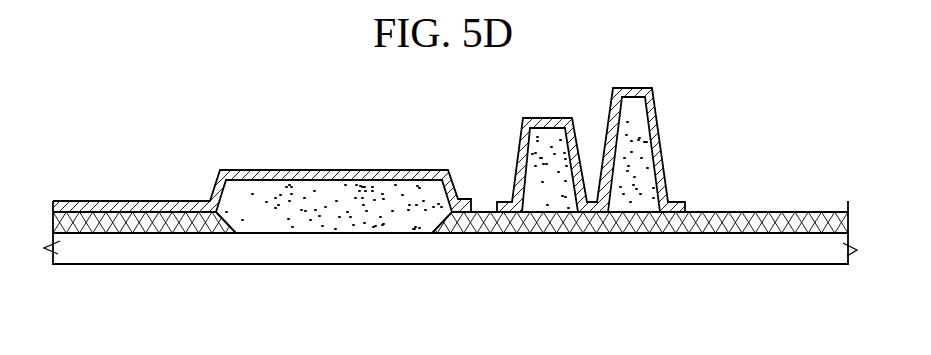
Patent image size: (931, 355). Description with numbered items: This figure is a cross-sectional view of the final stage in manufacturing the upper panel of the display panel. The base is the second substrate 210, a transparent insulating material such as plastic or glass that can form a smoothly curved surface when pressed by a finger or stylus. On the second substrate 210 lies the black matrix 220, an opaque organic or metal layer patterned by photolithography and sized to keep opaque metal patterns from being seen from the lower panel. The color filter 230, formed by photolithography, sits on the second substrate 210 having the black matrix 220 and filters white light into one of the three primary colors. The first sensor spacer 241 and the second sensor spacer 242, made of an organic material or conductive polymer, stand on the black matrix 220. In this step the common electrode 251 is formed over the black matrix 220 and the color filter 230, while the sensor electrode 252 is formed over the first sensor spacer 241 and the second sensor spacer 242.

The second substrate 210 is at (151, 243).
The black matrix 220 is at (587, 222).
The color filter 230 is at (368, 217).
The first sensor spacer 241 is at (535, 215).
The second sensor spacer 242 is at (638, 192).
The common electrode 251 is at (290, 178).
The sensor electrode 252 is at (663, 175).